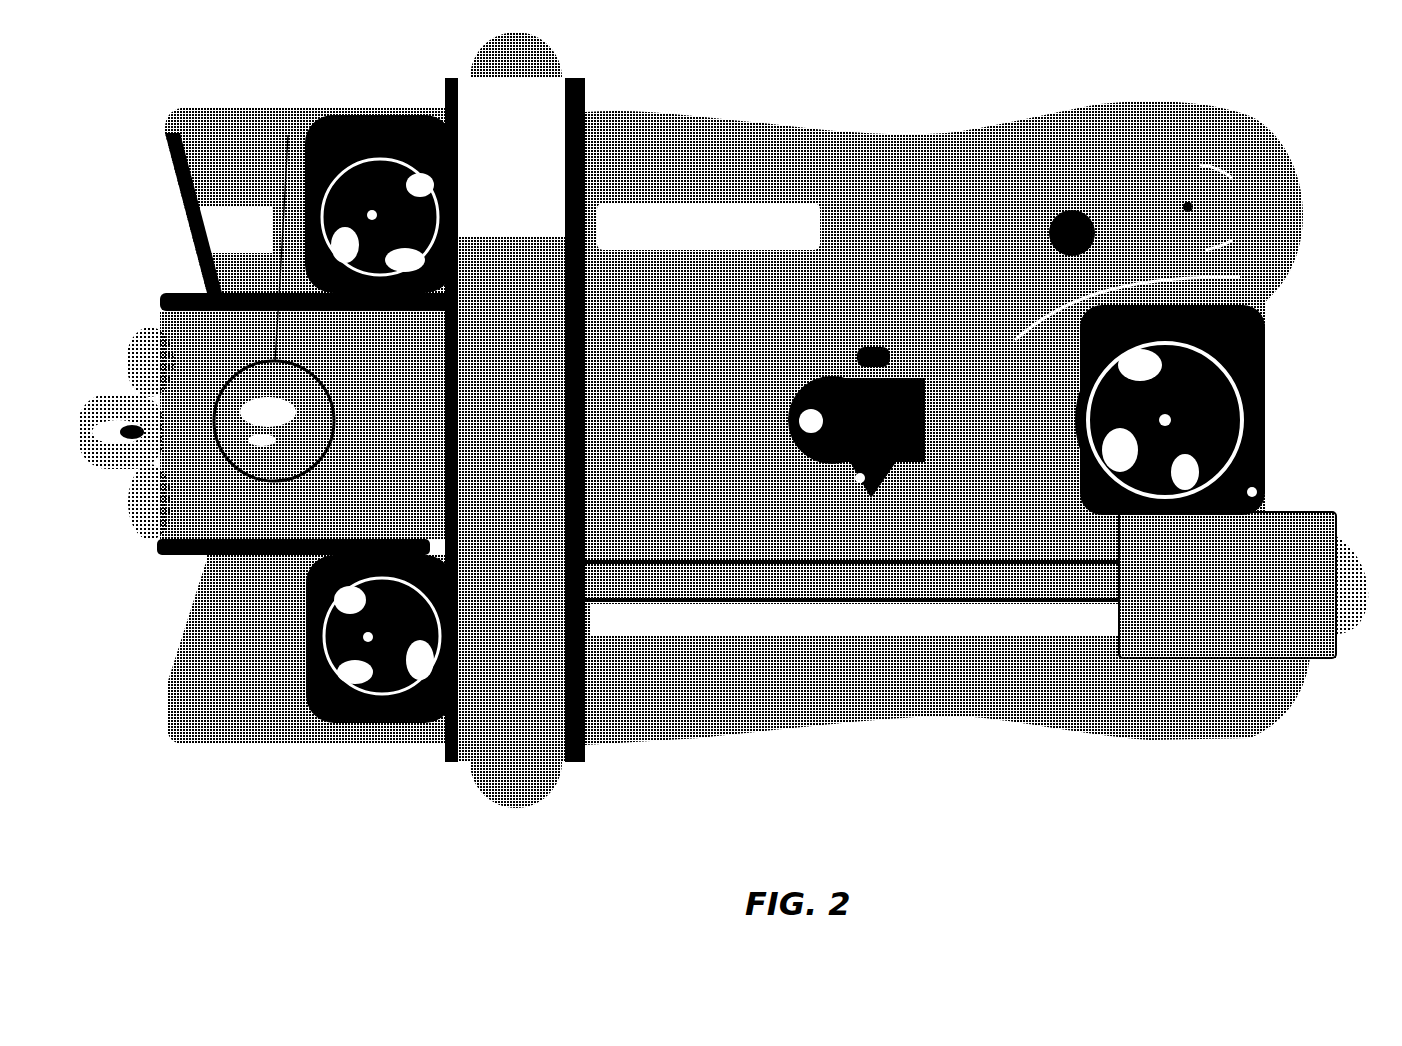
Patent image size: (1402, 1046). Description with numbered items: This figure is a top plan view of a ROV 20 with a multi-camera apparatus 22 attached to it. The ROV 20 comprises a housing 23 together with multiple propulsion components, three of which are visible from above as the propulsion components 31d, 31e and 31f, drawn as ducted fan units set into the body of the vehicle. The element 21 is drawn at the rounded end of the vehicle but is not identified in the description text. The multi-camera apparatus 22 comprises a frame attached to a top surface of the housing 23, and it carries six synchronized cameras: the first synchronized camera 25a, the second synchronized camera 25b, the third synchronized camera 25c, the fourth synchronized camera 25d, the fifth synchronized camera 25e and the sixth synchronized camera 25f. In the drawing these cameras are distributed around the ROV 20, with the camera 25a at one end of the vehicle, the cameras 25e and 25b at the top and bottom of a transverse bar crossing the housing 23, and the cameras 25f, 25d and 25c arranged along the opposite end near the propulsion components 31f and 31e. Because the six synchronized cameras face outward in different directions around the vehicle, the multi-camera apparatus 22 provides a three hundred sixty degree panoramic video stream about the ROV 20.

The ROV 20 is at (1012, 80).
The head portion 21 is at (1262, 128).
The multi-camera apparatus 22 is at (912, 610).
The housing 23 is at (798, 132).
The first synchronized camera 25a is at (1320, 660).
The second synchronized camera 25b is at (586, 764).
The third synchronized camera 25c is at (172, 556).
The fourth synchronized camera 25d is at (160, 300).
The fifth synchronized camera 25e is at (585, 90).
The sixth synchronized camera 25f is at (318, 108).
The propulsion component 31d is at (1270, 410).
The propulsion component 31e is at (386, 700).
The propulsion component 31f is at (413, 110).